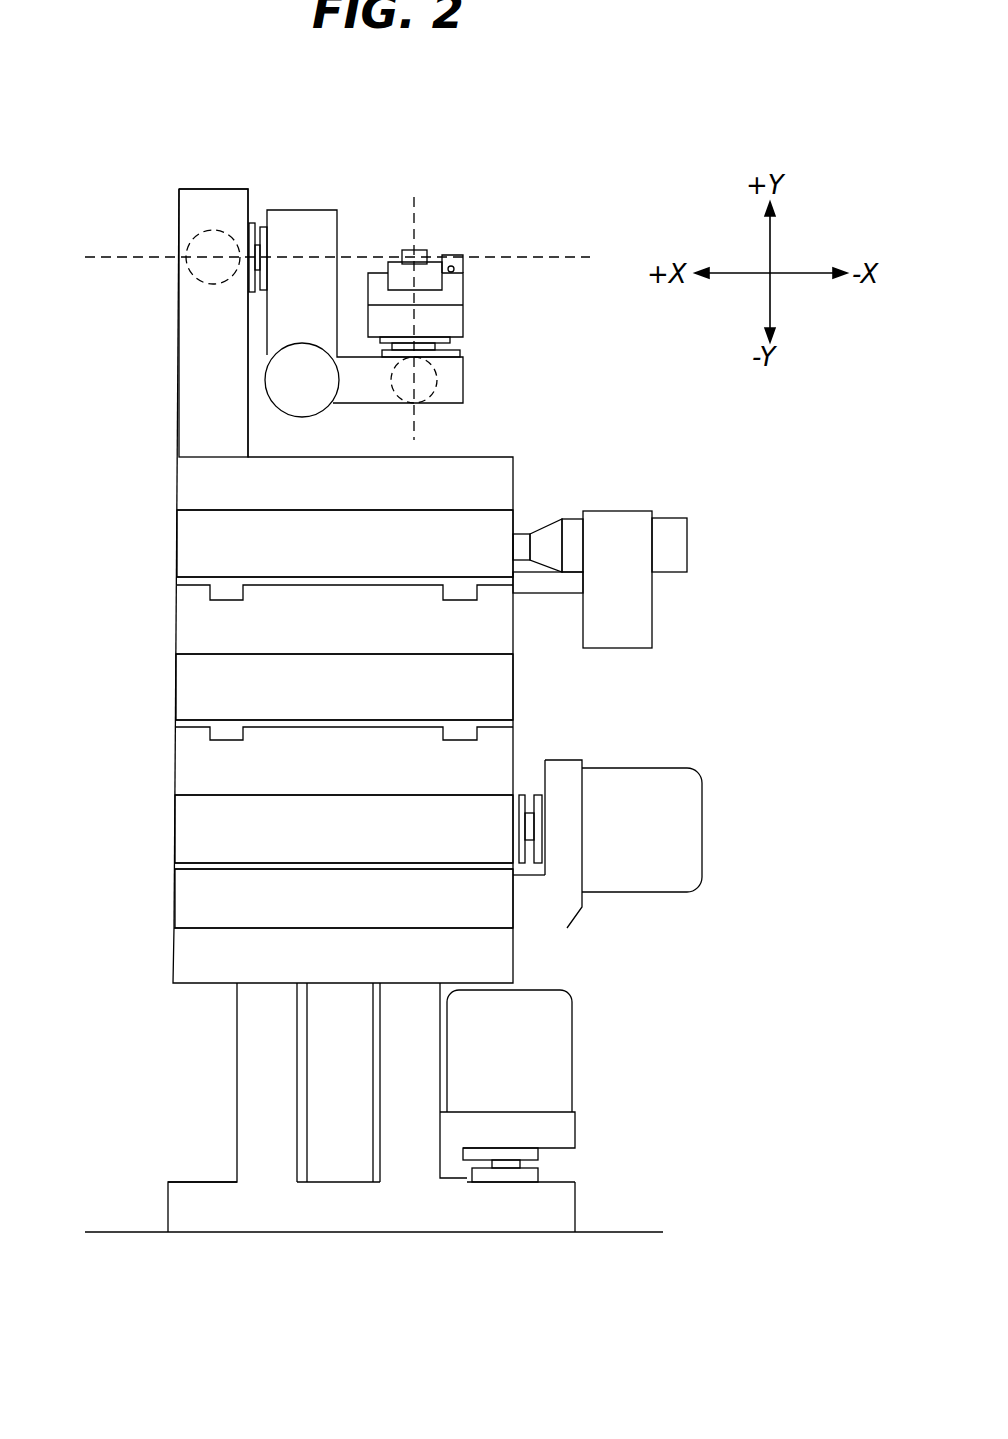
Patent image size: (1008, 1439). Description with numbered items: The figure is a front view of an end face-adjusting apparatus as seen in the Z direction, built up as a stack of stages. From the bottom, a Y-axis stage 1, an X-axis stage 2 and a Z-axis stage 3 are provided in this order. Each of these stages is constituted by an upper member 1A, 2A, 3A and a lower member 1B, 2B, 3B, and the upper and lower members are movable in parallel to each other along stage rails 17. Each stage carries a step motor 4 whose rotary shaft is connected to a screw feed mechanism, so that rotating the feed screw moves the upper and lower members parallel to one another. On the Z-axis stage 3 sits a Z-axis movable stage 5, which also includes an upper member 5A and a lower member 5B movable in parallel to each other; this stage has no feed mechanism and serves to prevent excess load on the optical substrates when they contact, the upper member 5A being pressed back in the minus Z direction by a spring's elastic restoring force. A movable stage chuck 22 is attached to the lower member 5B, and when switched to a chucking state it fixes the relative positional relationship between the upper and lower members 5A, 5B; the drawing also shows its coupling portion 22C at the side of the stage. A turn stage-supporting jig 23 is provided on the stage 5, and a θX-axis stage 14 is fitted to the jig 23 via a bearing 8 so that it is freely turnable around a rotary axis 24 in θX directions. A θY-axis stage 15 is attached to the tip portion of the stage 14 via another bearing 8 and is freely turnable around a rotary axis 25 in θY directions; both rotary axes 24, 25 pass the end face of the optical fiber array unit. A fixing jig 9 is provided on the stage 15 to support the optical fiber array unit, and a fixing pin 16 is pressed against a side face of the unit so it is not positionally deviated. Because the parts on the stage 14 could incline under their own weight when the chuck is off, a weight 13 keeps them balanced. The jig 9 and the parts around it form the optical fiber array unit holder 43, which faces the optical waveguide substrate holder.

The Y-axis stage 1 is at (100, 930).
The upper member 1A is at (498, 955).
The lower member 1B is at (556, 1204).
The X-axis stage 2 is at (103, 792).
The upper member 2A is at (185, 818).
The lower member 2B is at (186, 888).
The Z-axis stage 3 is at (103, 651).
The upper member 3A is at (197, 680).
The lower member 3B is at (198, 762).
The step motor 4 is at (540, 1066).
The Z-axis movable stage 5 is at (103, 511).
The upper member 5A is at (200, 540).
The lower member 5B is at (212, 628).
The bearing 8 is at (262, 230).
The fixing jig 9 is at (430, 270).
The weight 13 is at (276, 382).
The θX-axis stage 14 is at (308, 212).
The θY-axis stage 15 is at (452, 315).
The fixing pin 16 is at (462, 263).
The stage rails 17 is at (222, 592).
The movable stage chuck 22 is at (688, 546).
The coupling 22C is at (522, 540).
The turn stage-supporting jig 23 is at (202, 195).
The rotary axis 24 is at (105, 253).
The rotary axis 25 is at (414, 428).
The optical fiber array unit holder 43 is at (492, 214).